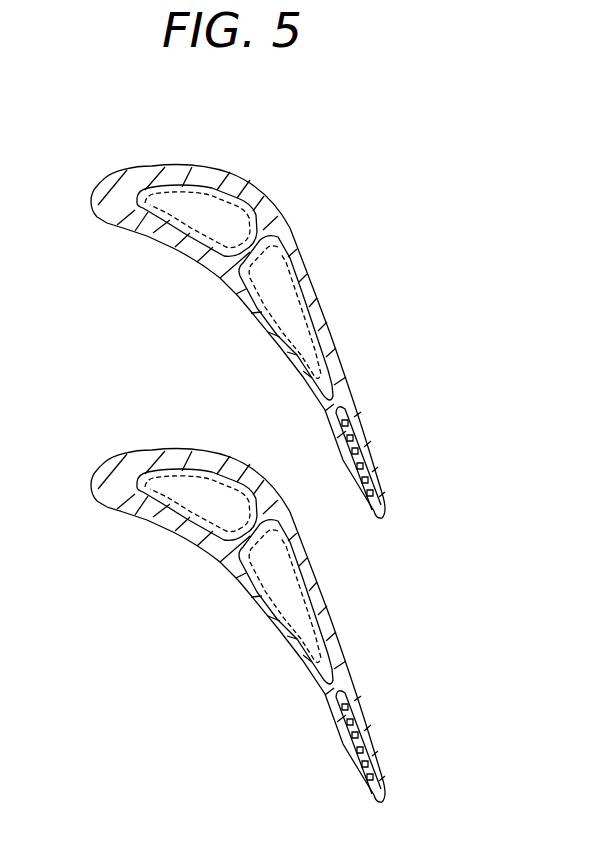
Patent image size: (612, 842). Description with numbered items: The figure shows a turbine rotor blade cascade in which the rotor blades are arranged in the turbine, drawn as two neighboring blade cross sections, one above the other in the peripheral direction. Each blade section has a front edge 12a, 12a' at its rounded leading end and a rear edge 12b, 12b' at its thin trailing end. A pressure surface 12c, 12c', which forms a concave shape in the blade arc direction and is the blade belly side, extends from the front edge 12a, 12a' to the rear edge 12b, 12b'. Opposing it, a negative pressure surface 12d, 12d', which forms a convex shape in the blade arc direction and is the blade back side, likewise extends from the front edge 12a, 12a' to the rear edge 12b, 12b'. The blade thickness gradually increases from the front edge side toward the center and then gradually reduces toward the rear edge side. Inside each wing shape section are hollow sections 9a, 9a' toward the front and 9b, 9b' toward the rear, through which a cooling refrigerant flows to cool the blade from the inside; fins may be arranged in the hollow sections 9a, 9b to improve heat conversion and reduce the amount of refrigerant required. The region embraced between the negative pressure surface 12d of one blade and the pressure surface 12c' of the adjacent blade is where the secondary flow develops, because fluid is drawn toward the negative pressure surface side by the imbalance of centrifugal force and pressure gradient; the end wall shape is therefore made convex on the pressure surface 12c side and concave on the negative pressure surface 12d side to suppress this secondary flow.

The hollow section 9a is at (197, 181).
The hollow section 9b is at (285, 318).
The front edge 12a is at (86, 193).
The rear edge 12b is at (383, 458).
The pressure surface 12c is at (235, 360).
The negative pressure surface 12d is at (245, 312).
The hollow section 9a' is at (197, 466).
The hollow section 9b' is at (285, 602).
The front edge 12a' is at (87, 477).
The rear edge 12b' is at (387, 742).
The pressure surface 12c' is at (235, 644).
The negative pressure surface 12d' is at (245, 600).